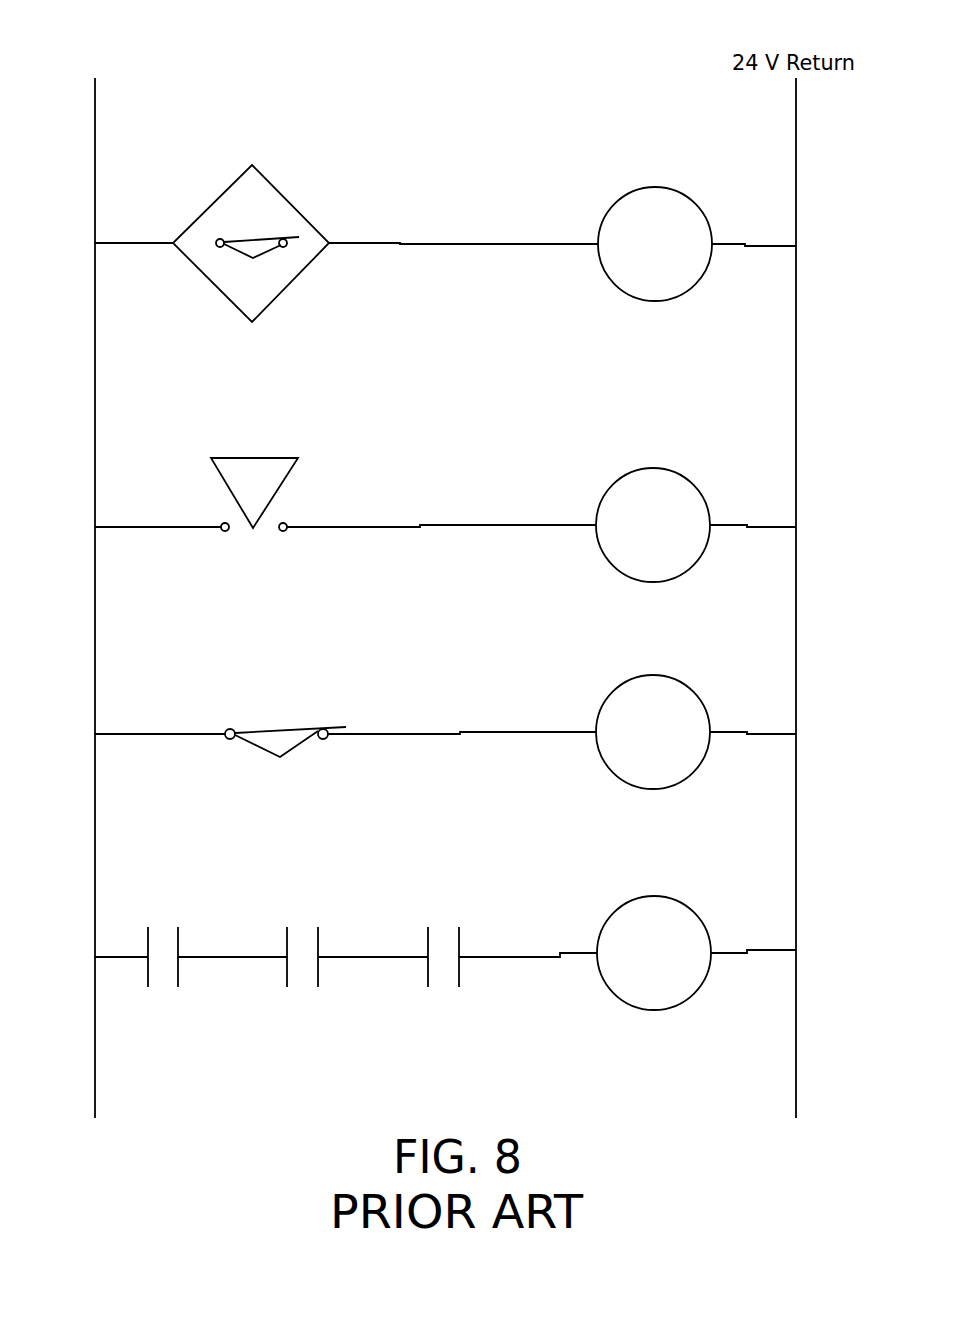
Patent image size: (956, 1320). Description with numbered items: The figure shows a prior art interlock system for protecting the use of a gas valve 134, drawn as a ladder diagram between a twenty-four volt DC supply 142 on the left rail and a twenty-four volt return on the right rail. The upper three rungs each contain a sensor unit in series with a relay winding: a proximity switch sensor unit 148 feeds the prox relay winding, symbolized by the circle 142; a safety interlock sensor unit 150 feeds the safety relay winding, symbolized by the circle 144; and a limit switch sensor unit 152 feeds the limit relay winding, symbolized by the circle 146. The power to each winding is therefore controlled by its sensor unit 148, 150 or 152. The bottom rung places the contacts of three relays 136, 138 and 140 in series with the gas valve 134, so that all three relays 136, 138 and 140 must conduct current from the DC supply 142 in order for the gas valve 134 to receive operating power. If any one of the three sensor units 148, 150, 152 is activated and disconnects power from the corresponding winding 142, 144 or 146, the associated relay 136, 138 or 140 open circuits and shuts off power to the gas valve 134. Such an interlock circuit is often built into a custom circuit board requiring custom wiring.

The 24V DC supply 142 is at (147, 62).
The sensor unit 148 is at (310, 182).
The sensor unit 150 is at (310, 472).
The sensor unit 152 is at (310, 708).
The circle symbolizing relay winding 144 is at (583, 475).
The circle symbolizing relay winding 146 is at (583, 713).
The relay 136 is at (190, 925).
The relay 138 is at (330, 925).
The relay 140 is at (475, 925).
The gas valve 134 is at (725, 925).